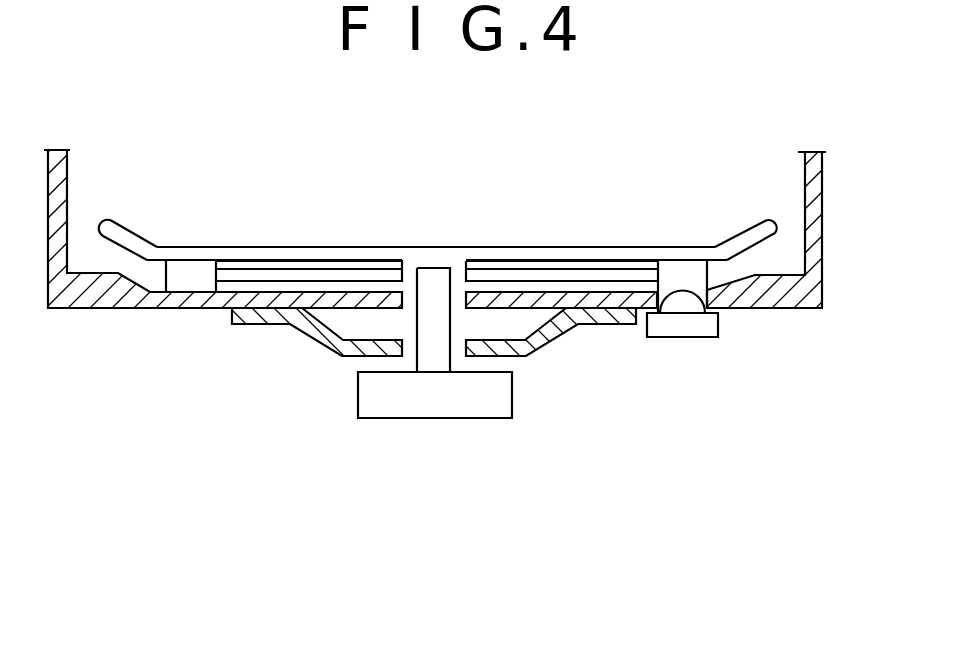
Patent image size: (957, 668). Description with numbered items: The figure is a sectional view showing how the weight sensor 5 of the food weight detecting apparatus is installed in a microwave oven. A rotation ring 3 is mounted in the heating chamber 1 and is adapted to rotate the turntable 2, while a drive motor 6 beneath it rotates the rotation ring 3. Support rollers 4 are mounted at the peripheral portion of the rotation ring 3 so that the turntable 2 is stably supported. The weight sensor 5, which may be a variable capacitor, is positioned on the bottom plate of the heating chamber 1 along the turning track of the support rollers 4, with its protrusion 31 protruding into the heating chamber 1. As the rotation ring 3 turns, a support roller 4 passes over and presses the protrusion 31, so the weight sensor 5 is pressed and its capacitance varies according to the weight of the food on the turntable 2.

The heating chamber 1 is at (815, 230).
The turntable 2 is at (518, 255).
The rotation ring 3 is at (255, 325).
The protrusion 31 is at (668, 307).
The support roller 4 is at (175, 283).
The weight sensor 5 is at (698, 340).
The drive motor 6 is at (512, 397).